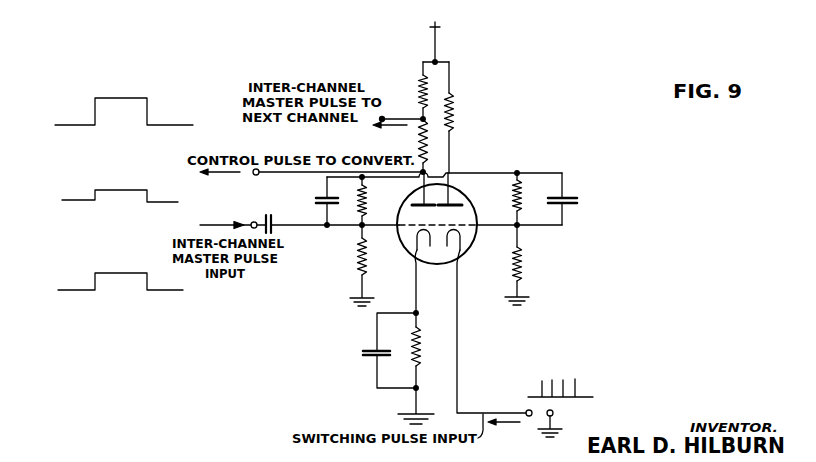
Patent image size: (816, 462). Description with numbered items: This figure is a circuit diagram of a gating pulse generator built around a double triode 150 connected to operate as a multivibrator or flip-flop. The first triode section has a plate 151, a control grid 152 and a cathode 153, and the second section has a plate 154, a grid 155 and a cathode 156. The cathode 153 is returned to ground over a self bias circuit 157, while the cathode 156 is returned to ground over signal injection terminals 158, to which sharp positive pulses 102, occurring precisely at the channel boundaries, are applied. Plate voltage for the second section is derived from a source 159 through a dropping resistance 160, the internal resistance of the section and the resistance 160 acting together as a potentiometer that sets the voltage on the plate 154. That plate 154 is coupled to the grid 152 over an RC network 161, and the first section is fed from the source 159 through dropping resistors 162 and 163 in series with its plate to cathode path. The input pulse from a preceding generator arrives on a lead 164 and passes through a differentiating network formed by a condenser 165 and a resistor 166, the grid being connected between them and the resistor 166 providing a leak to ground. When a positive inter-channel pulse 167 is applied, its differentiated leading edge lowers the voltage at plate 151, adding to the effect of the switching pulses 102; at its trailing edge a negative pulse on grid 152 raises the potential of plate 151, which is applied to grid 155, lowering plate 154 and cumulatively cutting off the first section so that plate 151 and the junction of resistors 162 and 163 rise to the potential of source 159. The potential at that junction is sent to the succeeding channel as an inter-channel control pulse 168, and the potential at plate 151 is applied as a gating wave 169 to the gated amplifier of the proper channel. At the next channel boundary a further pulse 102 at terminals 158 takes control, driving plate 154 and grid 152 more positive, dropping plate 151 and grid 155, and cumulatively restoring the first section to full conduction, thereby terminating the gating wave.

The sharp positive pulses 102 is at (562, 380).
The double triode 150 is at (478, 238).
The plate 151 is at (421, 203).
The control grid 152 is at (413, 227).
The cathode 153 is at (418, 255).
The plate 154 is at (459, 203).
The grid 155 is at (452, 225).
The cathode 156 is at (458, 260).
The self bias circuit 157 is at (413, 351).
The signal injection terminals 158 is at (537, 410).
The source 159 is at (436, 54).
The dropping resistance 160 is at (451, 113).
The RC network 161 is at (357, 197).
The dropping resistor 162 is at (420, 93).
The dropping resistor 163 is at (425, 140).
The lead 164 is at (305, 222).
The condenser 165 is at (258, 219).
The resistor 166 is at (356, 258).
The positive inter-channel pulse 167 is at (107, 275).
The inter-channel control pulse 168 is at (148, 119).
The gating wave 169 is at (98, 191).